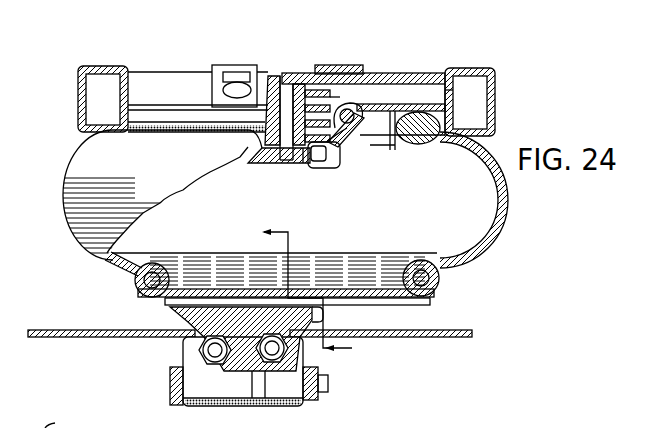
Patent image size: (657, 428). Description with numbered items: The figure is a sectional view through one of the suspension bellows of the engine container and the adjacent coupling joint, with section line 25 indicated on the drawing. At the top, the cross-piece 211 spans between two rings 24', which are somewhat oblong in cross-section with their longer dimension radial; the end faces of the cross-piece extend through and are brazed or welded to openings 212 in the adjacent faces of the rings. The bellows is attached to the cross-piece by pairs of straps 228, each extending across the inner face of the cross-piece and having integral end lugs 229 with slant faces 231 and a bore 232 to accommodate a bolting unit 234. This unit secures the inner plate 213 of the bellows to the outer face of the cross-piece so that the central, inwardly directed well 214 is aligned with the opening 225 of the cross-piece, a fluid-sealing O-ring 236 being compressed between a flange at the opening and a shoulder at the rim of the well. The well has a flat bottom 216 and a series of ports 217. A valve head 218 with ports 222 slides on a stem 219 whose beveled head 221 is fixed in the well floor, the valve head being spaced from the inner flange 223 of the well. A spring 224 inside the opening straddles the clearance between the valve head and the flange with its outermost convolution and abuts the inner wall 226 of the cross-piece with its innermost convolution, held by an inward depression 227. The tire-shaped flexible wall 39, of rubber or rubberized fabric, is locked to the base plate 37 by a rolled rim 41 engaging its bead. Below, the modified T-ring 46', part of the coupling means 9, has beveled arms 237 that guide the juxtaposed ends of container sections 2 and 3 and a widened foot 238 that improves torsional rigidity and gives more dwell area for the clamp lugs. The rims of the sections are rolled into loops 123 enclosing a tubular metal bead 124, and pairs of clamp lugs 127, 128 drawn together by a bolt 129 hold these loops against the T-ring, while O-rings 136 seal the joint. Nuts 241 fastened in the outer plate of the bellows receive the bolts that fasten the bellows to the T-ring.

The ring 24' is at (302, 87).
The rolled rim 41 is at (138, 112).
The slant faces 231 is at (213, 97).
The bore 232 is at (240, 98).
The straps 228 is at (240, 50).
The bolting unit 234 is at (243, 72).
The end lugs 229 is at (213, 82).
The inward depression 227 is at (281, 95).
The inner wall 226 is at (407, 77).
The cross-piece 211 is at (433, 73).
The openings 212 is at (448, 102).
The stem 219 is at (300, 84).
The spring 224 is at (330, 97).
The O-ring 236 is at (392, 104).
The valve head 218 is at (345, 107).
The opening 225 is at (348, 128).
The inner plate 213 is at (395, 143).
The well 214 is at (350, 130).
The ports 217 is at (340, 162).
The flat bottom 216 is at (310, 165).
The ports 222 is at (258, 163).
The inner flange 223 is at (303, 165).
The beveled head 221 is at (283, 163).
The flexible wall 39 is at (507, 220).
The base plate 37 is at (385, 302).
The modified T-ring 46' is at (277, 305).
The container section 2 is at (105, 337).
The container section 3 is at (472, 330).
The coupling means 9 is at (156, 387).
The beveled arms 237 is at (168, 313).
The clamp lug 127 is at (215, 406).
The widened foot 238 is at (216, 368).
The O-ring 136 is at (202, 358).
The rolled rim loop 123 is at (198, 350).
The tubular metal bead 124 is at (288, 350).
The bolt 129 is at (172, 401).
The clamp lug 128 is at (292, 406).
The nut 241 is at (63, 421).
The section line 25 is at (299, 294).